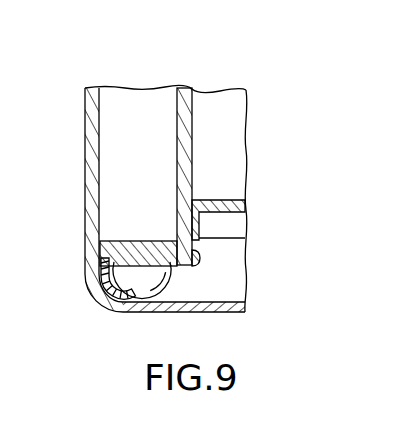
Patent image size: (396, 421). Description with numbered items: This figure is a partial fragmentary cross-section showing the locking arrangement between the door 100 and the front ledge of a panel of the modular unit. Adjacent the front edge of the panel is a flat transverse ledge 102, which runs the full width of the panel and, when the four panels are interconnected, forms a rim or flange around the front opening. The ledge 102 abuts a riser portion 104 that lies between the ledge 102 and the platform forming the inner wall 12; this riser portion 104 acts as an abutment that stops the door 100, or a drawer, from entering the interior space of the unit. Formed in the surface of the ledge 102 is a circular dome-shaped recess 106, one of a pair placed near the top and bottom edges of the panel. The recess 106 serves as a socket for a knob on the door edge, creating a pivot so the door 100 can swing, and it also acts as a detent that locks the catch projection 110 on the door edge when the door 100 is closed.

The door 100 is at (165, 78).
The inner wall 12 is at (223, 200).
The riser portion 104 is at (245, 238).
The ledge 102 is at (90, 248).
The catch projection 110 is at (126, 263).
The recess 106 is at (129, 287).